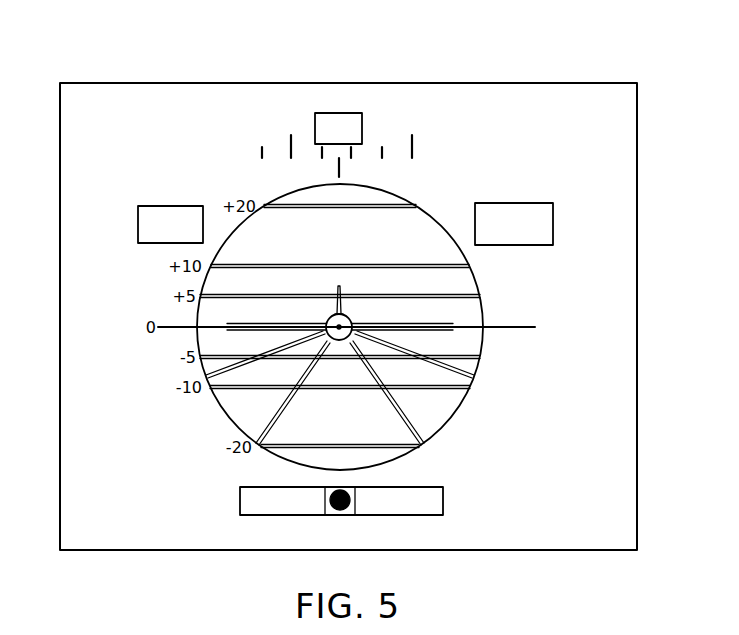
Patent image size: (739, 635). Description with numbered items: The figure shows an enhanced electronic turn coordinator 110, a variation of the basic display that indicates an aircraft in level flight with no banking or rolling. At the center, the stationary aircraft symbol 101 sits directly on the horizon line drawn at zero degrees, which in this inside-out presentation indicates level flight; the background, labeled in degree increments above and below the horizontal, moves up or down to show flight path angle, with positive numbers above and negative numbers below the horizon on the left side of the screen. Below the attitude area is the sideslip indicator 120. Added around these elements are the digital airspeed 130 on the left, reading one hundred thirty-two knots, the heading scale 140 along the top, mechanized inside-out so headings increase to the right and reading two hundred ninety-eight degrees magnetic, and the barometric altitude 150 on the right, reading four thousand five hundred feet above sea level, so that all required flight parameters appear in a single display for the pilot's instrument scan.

The electronic turn coordinator 110 is at (112, 287).
The aircraft symbol 101 is at (352, 316).
The sideslip indicator 120 is at (218, 501).
The digital airspeed 130 is at (160, 206).
The heading scale 140 is at (337, 113).
The barometric altitude 150 is at (518, 203).